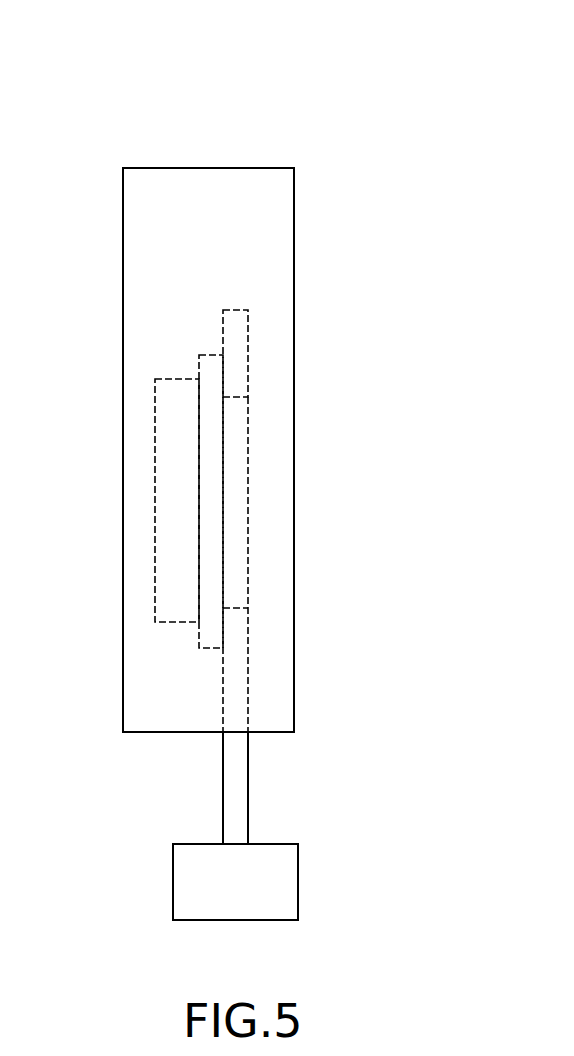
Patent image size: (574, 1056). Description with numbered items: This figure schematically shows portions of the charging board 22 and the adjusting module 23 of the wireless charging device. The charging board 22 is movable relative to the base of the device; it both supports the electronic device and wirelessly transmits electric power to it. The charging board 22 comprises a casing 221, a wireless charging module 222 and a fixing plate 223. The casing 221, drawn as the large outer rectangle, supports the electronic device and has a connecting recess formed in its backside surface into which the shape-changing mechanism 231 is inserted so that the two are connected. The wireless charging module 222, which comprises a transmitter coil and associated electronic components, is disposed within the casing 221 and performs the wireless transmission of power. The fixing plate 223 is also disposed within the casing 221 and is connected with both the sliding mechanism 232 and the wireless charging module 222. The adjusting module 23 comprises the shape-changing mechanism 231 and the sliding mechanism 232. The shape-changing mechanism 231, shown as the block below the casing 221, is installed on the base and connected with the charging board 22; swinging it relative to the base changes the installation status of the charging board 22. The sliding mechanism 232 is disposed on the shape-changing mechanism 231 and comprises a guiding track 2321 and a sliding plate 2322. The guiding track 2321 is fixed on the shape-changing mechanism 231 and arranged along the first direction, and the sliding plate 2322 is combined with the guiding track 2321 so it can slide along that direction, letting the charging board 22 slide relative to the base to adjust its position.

The charging board 22 is at (150, 139).
The casing 221 is at (223, 180).
The wireless charging module 222 is at (170, 478).
The fixing plate 223 is at (208, 630).
The adjusting module 23 is at (385, 542).
The shape-changing mechanism 231 is at (266, 858).
The sliding mechanism 232 is at (322, 297).
The guiding track 2321 is at (238, 322).
The sliding plate 2322 is at (233, 480).